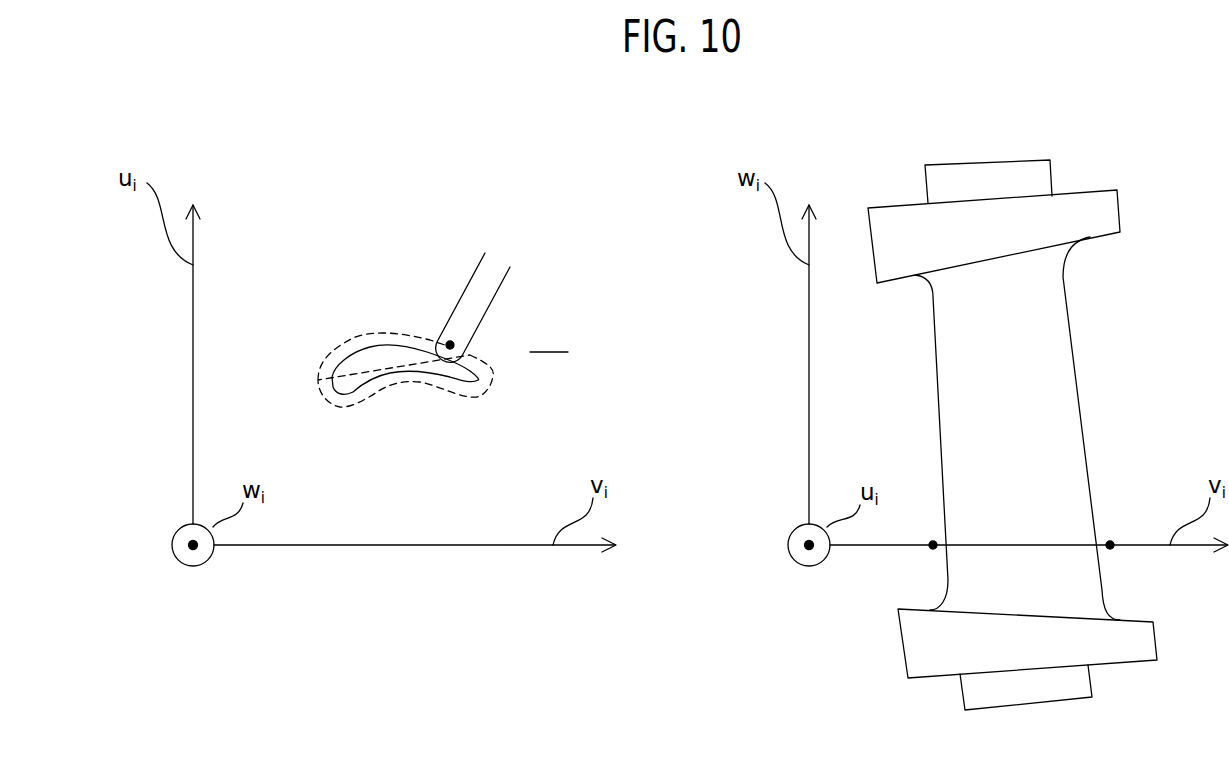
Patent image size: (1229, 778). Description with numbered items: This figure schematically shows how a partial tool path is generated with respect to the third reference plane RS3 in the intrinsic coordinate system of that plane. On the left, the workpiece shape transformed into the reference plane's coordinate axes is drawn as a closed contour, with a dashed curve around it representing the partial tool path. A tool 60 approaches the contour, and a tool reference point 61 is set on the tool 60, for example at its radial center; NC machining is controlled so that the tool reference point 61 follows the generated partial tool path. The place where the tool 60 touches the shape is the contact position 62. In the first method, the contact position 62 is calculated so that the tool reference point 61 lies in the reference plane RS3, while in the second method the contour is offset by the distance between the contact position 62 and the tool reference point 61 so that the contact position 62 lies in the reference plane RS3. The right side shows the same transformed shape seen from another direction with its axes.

The tool 60 is at (482, 282).
The tool reference point 61 is at (450, 340).
The contact position 62 is at (443, 357).
The third reference plane RS3 is at (550, 341).